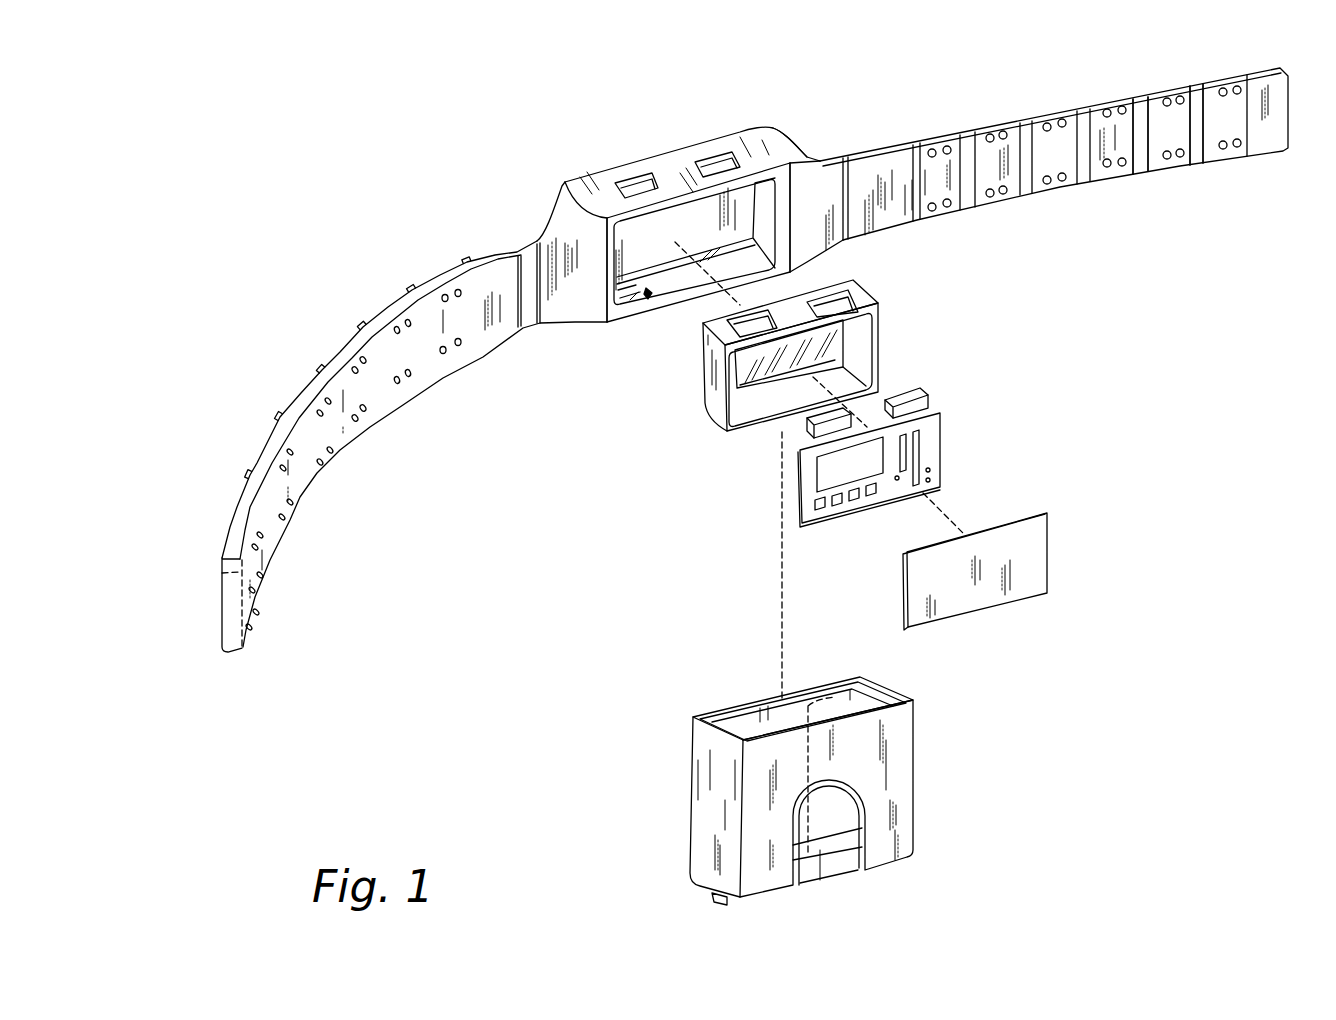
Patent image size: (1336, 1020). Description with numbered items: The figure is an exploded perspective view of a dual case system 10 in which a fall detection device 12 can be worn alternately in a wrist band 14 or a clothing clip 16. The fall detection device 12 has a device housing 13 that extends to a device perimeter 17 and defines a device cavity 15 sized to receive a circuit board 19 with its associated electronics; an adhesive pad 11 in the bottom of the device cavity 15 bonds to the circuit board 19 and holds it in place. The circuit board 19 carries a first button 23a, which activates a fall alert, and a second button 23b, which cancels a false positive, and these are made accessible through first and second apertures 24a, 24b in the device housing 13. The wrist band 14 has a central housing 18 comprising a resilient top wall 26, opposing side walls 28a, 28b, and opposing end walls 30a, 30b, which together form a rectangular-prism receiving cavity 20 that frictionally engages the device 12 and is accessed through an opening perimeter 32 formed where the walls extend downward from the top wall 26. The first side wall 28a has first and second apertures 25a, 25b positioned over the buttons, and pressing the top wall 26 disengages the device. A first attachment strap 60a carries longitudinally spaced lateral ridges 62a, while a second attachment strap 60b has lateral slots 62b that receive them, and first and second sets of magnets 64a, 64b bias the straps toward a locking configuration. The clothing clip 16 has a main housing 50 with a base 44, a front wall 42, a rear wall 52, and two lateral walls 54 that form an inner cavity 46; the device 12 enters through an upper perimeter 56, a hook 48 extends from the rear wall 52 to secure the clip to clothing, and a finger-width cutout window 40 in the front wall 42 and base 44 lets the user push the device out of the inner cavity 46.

The dual case system 10 is at (330, 134).
The wrist band 14 is at (835, 112).
The central housing 18 is at (552, 205).
The receiving cavity 20 is at (649, 300).
The first aperture 25a is at (648, 183).
The second aperture 25b is at (718, 157).
The top wall 26 is at (668, 255).
The first side wall 28a is at (633, 222).
The second side wall 28b is at (616, 290).
The first end wall 30a is at (610, 240).
The second end wall 30b is at (786, 205).
The opening perimeter 32 is at (788, 165).
The fall detection device 12 is at (973, 360).
The device housing 13 is at (880, 337).
The device perimeter 17 is at (878, 358).
The device cavity 15 is at (735, 390).
The adhesive pad 11 is at (763, 372).
The first aperture 24a is at (762, 315).
The second aperture 24b is at (845, 295).
The first button 23a is at (807, 430).
The second button 23b is at (930, 398).
The circuit board 19 is at (940, 447).
The clothing clip 16 is at (975, 771).
The hook 48 is at (705, 710).
The upper perimeter 56 is at (703, 727).
The inner cavity 46 is at (840, 698).
The rear wall 52 is at (827, 700).
The main housing 50 is at (707, 820).
The front wall 42 is at (903, 743).
The cutout window 40 is at (863, 820).
The base 44 is at (845, 858).
The lateral walls 54 is at (897, 815).
The first attachment strap 60a is at (270, 447).
The second attachment strap 60b is at (1057, 98).
The lateral ridges 62a is at (322, 366).
The lateral slots 62b is at (1197, 97).
The first set of magnets 64a is at (445, 293).
The second set of magnets 64b is at (1047, 127).